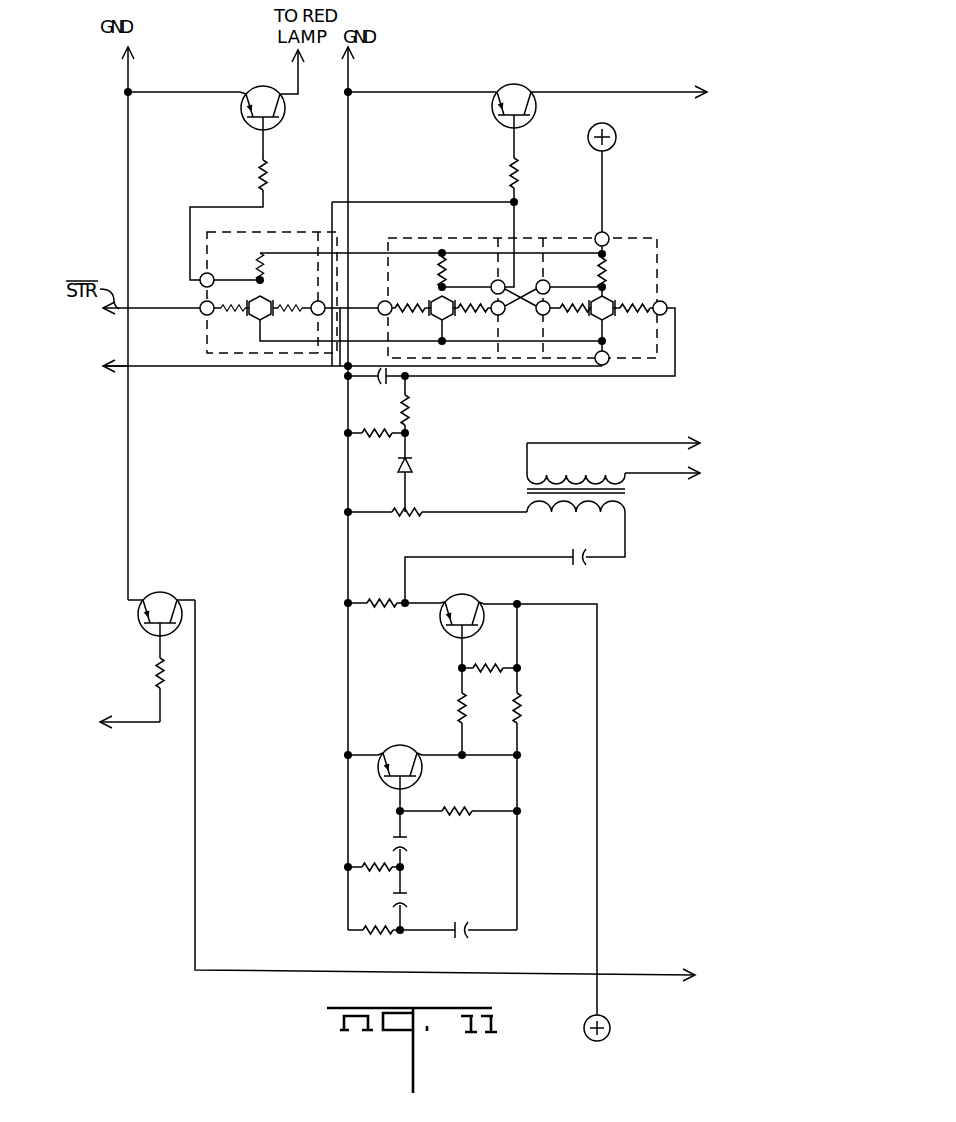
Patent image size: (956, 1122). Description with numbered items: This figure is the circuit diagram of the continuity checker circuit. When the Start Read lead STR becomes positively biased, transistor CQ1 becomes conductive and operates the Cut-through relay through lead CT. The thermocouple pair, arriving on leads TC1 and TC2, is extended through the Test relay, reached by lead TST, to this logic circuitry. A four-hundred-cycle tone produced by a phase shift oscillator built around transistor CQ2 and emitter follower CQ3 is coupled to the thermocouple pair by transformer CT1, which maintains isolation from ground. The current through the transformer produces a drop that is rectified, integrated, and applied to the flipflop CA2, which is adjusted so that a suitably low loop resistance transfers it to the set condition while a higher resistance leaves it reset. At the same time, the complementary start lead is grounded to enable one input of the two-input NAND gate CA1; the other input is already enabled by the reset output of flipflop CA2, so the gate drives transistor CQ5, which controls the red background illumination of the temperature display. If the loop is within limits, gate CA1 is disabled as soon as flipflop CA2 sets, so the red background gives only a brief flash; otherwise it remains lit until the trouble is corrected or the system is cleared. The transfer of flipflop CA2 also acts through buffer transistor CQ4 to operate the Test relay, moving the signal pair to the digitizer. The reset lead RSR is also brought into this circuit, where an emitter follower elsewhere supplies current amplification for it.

The transistor CQ1 is at (182, 596).
The transistor CQ2 is at (434, 746).
The emitter follower CQ3 is at (494, 600).
The buffer transistor CQ4 is at (537, 85).
The transistor CQ5 is at (247, 125).
The two-input NAND gate CA1 is at (271, 368).
The flipflop CA2 is at (531, 238).
The transformer CT1 is at (527, 490).
The thermocouple lead TC1 is at (652, 473).
The thermocouple lead TC2 is at (648, 443).
The Test lead TST is at (648, 92).
The Start Read lead STR is at (157, 710).
The RSR lead RSR is at (118, 364).
The Cut-through lead CT is at (644, 975).